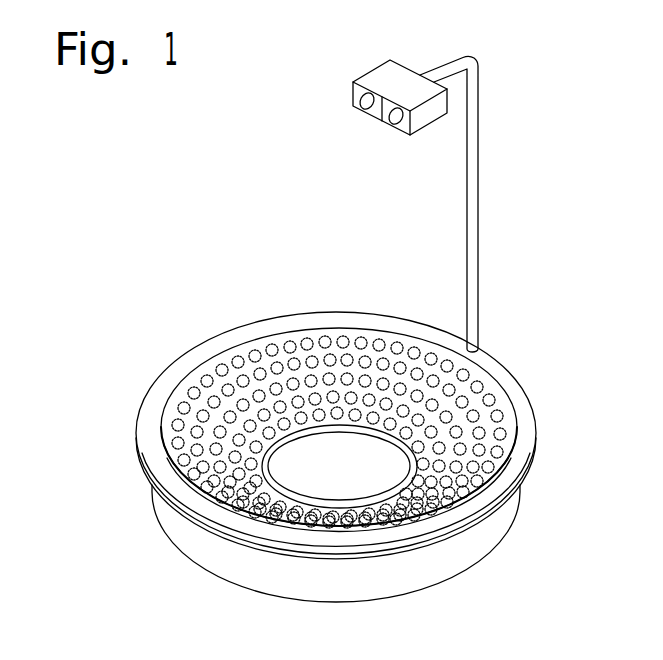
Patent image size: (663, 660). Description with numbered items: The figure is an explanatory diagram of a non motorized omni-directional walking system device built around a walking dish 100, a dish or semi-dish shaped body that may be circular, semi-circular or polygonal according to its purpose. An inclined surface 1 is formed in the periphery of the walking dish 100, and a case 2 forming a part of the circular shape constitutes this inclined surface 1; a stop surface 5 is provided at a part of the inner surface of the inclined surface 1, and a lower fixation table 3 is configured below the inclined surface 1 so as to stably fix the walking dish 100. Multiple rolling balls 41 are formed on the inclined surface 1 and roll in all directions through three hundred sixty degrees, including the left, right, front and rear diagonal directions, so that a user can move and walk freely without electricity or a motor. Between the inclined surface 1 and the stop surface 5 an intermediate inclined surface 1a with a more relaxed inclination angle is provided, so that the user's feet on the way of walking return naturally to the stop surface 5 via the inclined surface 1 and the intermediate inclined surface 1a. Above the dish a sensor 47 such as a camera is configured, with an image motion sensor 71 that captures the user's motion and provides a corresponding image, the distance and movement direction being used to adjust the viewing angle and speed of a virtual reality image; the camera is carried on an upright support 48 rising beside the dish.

The walking dish 100 is at (161, 345).
The inclined surface 1 is at (409, 382).
The intermediate inclined surface 1a is at (406, 468).
The case 2 is at (527, 418).
The lower fixation table 3 is at (490, 540).
The stop surface 5 is at (345, 445).
The rolling ball 41 is at (265, 345).
The sensor 47 is at (380, 118).
The image motion sensor 71 is at (400, 97).
The support pole 48 is at (474, 197).